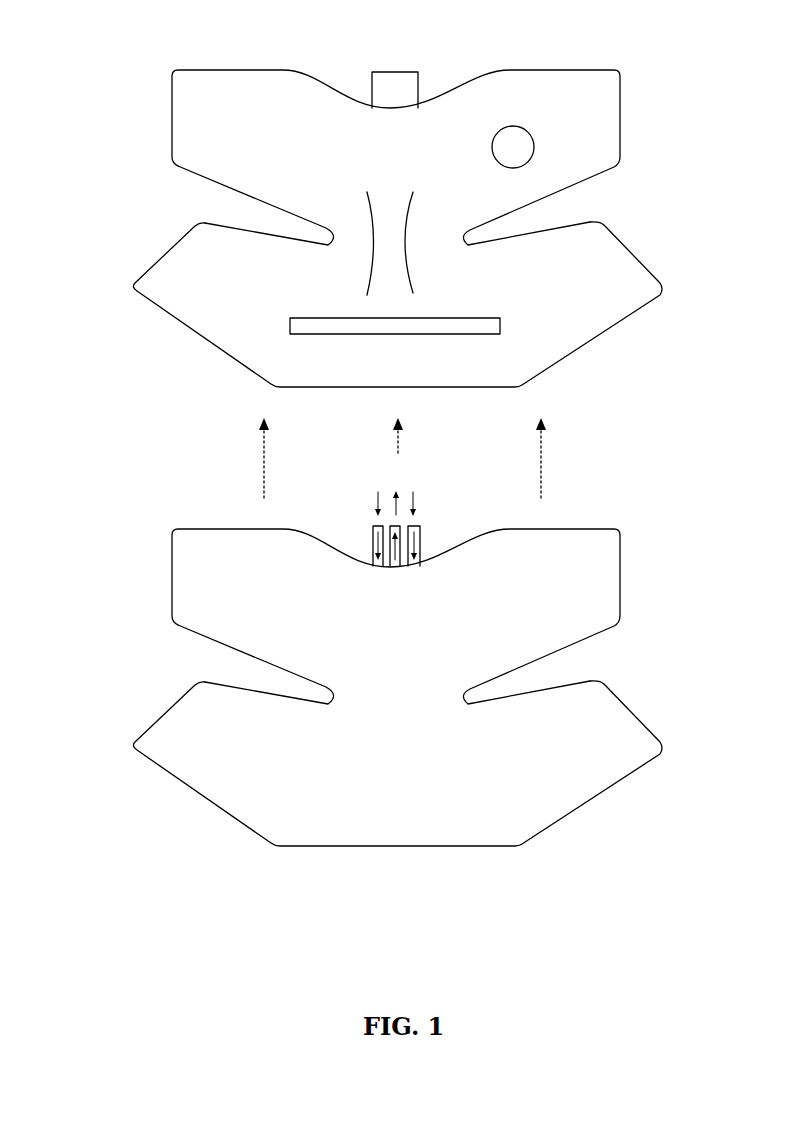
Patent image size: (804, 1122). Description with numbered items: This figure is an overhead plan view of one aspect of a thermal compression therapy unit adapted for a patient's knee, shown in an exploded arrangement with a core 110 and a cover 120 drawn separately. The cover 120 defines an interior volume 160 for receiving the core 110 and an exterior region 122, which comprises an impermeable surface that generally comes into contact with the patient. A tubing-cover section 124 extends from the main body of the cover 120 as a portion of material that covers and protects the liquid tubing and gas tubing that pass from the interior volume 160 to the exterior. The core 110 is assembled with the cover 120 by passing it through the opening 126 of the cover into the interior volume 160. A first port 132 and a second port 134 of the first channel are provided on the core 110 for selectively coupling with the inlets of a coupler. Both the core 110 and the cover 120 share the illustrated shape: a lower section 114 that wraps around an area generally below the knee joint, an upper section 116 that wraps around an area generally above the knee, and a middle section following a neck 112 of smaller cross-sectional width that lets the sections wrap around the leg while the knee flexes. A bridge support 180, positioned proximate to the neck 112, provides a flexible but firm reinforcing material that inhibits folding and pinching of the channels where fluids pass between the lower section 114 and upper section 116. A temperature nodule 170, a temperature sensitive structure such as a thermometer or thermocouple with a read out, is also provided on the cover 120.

The core 110 is at (406, 651).
The neck 112 is at (256, 664).
The lower section 114 is at (396, 616).
The upper section 116 is at (397, 763).
The cover 120 is at (376, 202).
The exterior region 122 is at (237, 93).
The tubing-cover section 124 is at (380, 67).
The opening 126 is at (477, 330).
The first port 132 is at (373, 530).
The second port 134 is at (390, 525).
The interior volume 160 is at (397, 687).
The temperature nodule 170 is at (520, 147).
The bridge support 180 is at (413, 270).